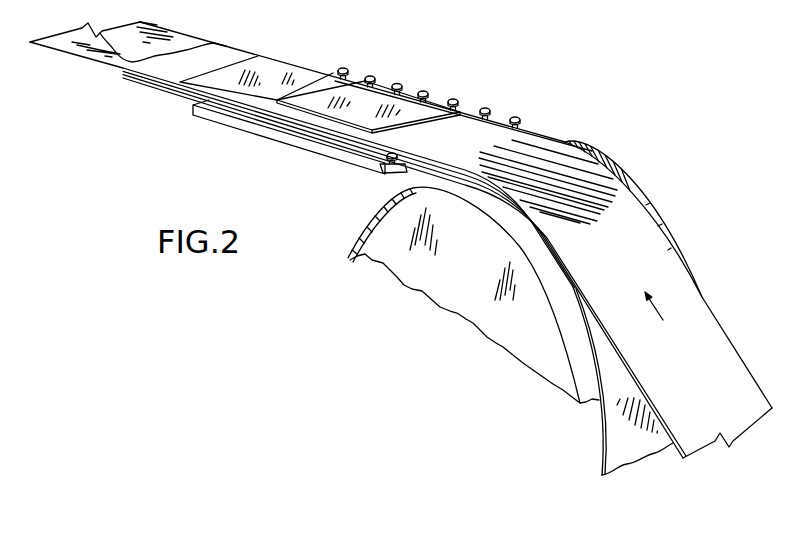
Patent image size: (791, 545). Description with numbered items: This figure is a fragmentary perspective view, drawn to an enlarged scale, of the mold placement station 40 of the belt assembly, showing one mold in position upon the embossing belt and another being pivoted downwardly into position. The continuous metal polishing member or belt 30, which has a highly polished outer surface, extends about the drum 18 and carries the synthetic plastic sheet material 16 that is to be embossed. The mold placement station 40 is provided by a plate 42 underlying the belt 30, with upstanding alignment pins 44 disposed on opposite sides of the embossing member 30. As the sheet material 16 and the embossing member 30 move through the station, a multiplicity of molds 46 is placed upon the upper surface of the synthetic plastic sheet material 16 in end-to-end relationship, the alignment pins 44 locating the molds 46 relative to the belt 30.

The synthetic plastic sheet material 16 is at (242, 52).
The drum 18 is at (650, 190).
The continuous metal polishing member or belt 30 is at (188, 38).
The mold placement station 40 is at (442, 90).
The plate 42 is at (277, 137).
The upstanding alignment pins 44 is at (515, 116).
The molds 46 is at (307, 72).